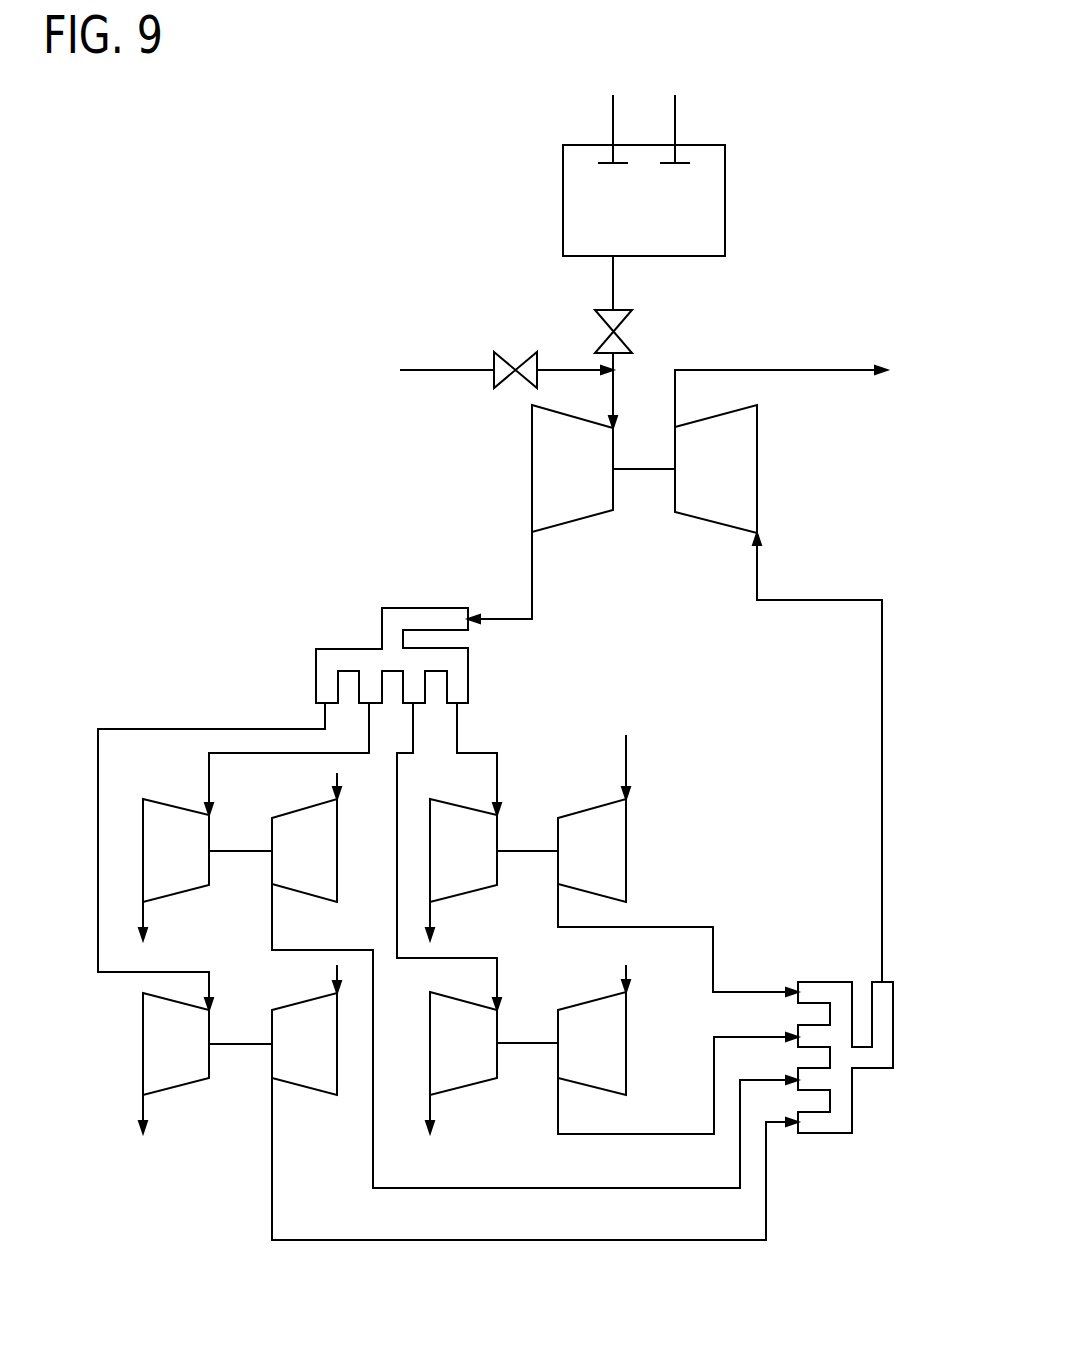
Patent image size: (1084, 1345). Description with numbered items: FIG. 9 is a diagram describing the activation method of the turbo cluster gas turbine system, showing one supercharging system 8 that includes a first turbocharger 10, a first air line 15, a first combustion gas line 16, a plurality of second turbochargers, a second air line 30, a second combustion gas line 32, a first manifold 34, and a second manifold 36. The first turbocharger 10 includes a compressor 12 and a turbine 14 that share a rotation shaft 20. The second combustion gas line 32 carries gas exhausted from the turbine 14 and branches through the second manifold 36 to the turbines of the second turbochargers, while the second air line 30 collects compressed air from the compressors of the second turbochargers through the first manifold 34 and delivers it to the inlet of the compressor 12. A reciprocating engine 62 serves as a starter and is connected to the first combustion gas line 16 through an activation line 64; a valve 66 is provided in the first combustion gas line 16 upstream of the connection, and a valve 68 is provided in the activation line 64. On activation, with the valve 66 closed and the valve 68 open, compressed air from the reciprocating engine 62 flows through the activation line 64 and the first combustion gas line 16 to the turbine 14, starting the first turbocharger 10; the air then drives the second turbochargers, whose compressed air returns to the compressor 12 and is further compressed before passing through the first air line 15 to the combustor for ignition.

The supercharging system 8 is at (858, 427).
The first turbocharger 10 is at (806, 407).
The compressor 12 is at (757, 478).
The turbine 14 is at (532, 482).
The first air line 15 is at (675, 383).
The first combustion gas line 16 is at (613, 392).
The rotation shaft 20 is at (648, 472).
The second air line 30 is at (882, 845).
The second combustion gas line 32 is at (532, 578).
The first manifold 34 is at (893, 1037).
The second manifold 36 is at (389, 606).
The reciprocating engine 62 is at (725, 200).
The activation line 64 is at (613, 280).
The valve 66 is at (597, 318).
The valve 68 is at (509, 359).